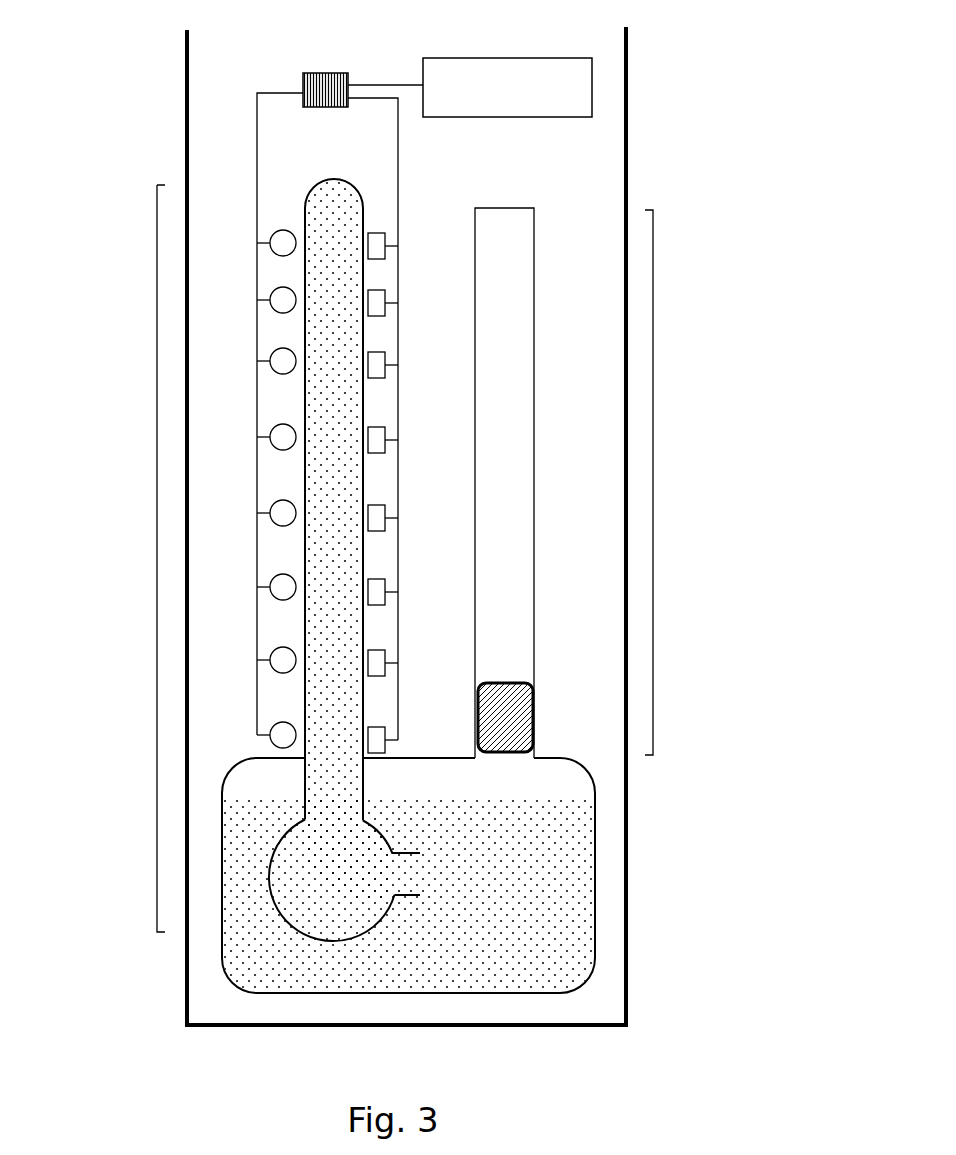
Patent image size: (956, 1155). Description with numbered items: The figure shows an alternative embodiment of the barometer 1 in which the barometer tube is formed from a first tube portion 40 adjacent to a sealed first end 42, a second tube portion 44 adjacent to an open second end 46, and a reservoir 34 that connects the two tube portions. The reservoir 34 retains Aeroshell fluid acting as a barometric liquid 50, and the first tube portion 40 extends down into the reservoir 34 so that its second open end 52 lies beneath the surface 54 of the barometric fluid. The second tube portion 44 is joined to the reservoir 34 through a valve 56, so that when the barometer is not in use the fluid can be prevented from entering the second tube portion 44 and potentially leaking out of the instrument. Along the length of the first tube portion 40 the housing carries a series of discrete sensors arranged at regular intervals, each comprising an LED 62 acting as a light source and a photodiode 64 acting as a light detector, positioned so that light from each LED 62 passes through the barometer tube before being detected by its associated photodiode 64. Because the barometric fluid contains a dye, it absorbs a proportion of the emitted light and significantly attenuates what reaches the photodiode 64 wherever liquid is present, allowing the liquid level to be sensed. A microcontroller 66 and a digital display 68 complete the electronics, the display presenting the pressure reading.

The barometer 1 is at (98, 266).
The reservoir 34 is at (222, 833).
The first tube portion 40 is at (157, 553).
The sealed first end 42 is at (335, 178).
The second tube portion 44 is at (653, 478).
The open second end 46 is at (507, 207).
The barometric liquid 50 is at (248, 902).
The second open end 52 is at (418, 875).
The surface 54 is at (535, 803).
The valve 56 is at (533, 698).
The LED 62 is at (283, 237).
The photodiode 64 is at (387, 243).
The microcontroller 66 is at (318, 72).
The display 68 is at (478, 57).